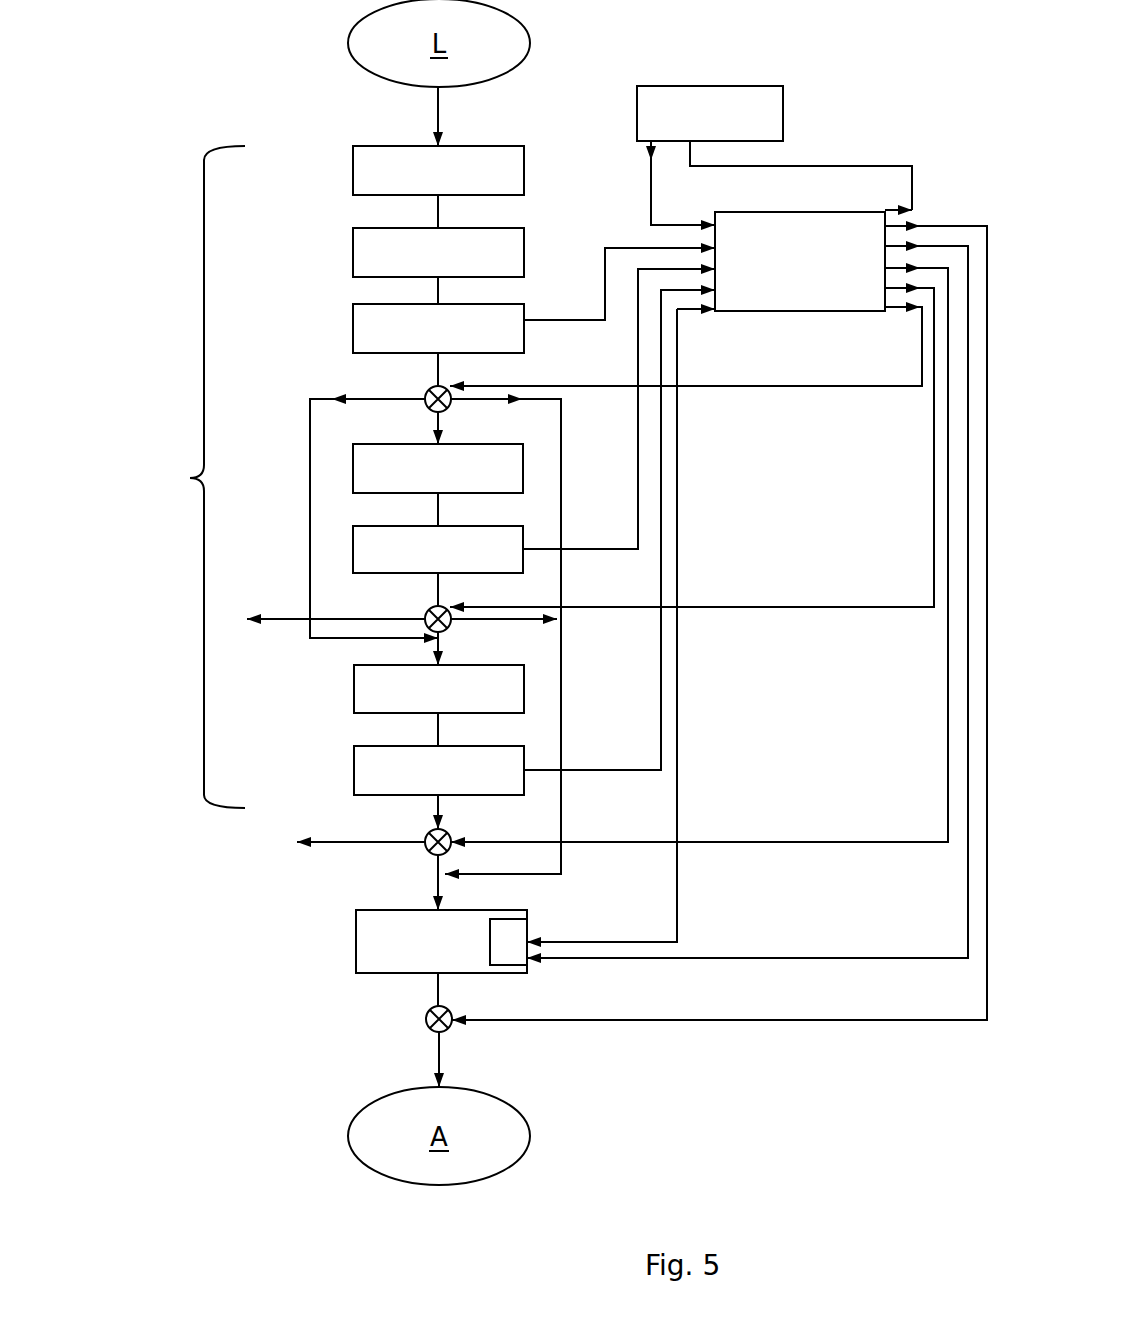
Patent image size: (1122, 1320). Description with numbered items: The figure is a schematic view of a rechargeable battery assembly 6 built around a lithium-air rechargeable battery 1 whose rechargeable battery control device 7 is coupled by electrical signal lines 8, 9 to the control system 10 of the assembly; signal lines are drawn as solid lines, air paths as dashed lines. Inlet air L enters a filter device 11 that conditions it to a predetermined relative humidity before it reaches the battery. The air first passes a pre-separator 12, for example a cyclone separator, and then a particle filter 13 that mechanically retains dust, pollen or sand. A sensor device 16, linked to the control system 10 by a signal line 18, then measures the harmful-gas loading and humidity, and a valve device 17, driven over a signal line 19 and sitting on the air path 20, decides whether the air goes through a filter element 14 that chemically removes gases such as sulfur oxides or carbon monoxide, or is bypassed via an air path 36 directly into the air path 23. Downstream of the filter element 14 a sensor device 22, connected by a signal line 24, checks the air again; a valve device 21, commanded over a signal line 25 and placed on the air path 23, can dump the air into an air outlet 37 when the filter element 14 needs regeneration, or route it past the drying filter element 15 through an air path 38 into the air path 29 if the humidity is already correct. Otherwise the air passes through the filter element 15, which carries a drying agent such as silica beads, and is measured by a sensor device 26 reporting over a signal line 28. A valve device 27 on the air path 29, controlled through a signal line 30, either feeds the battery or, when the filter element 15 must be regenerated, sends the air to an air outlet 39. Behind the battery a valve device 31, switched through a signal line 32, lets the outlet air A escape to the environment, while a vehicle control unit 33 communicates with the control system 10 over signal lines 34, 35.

The lithium-air rechargeable battery 1 is at (355, 962).
The rechargeable battery assembly 6 is at (113, 108).
The rechargeable battery control device 7 is at (510, 955).
The electrical signal line 8 is at (797, 958).
The electrical signal line 9 is at (677, 894).
The control system 10 is at (786, 278).
The filter device 11 is at (192, 478).
The pre-separator 12 is at (500, 172).
The particle filter 13 is at (497, 243).
The filter element 14 is at (510, 473).
The filter element 15 is at (512, 690).
The sensor device 16 is at (510, 343).
The valve device 17 is at (428, 392).
The signal line 18 is at (623, 245).
The signal line 19 is at (768, 388).
The air path 20 is at (442, 420).
The valve device 21 is at (447, 628).
The sensor device 22 is at (515, 552).
The air path 23 is at (442, 585).
The signal line 24 is at (638, 430).
The signal line 25 is at (820, 608).
The sensor device 26 is at (512, 767).
The valve device 27 is at (452, 852).
The signal line 28 is at (661, 652).
The air path 29 is at (443, 888).
The signal line 30 is at (820, 843).
The valve device 31 is at (453, 1032).
The signal line 32 is at (873, 1022).
The vehicle control unit 33 is at (694, 131).
The signal line 34 is at (670, 225).
The signal line 35 is at (866, 167).
The air path 36 is at (308, 462).
The air outlet 37 is at (278, 619).
The air path 38 is at (561, 808).
The air outlet 39 is at (345, 843).